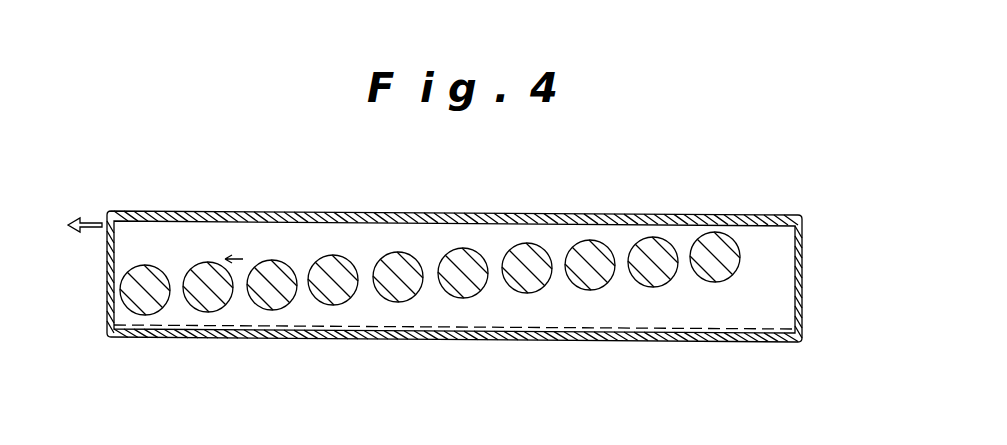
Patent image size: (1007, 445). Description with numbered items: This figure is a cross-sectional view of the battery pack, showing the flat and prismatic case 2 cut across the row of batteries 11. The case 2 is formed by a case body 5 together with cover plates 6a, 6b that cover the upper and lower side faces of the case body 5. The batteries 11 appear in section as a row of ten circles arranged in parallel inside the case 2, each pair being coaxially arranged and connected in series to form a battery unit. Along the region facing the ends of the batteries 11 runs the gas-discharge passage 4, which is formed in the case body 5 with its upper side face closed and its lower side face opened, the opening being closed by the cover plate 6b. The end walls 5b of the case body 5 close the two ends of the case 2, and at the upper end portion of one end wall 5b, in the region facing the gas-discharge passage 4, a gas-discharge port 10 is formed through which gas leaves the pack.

The case 2 is at (293, 212).
The gas-discharge passage 4 is at (234, 243).
The case body 5 is at (435, 272).
The end wall 5b is at (108, 268).
The cover plate 6a is at (347, 213).
The cover plate 6b is at (357, 336).
The gas-discharge port 10 is at (108, 222).
The battery 11 is at (205, 300).